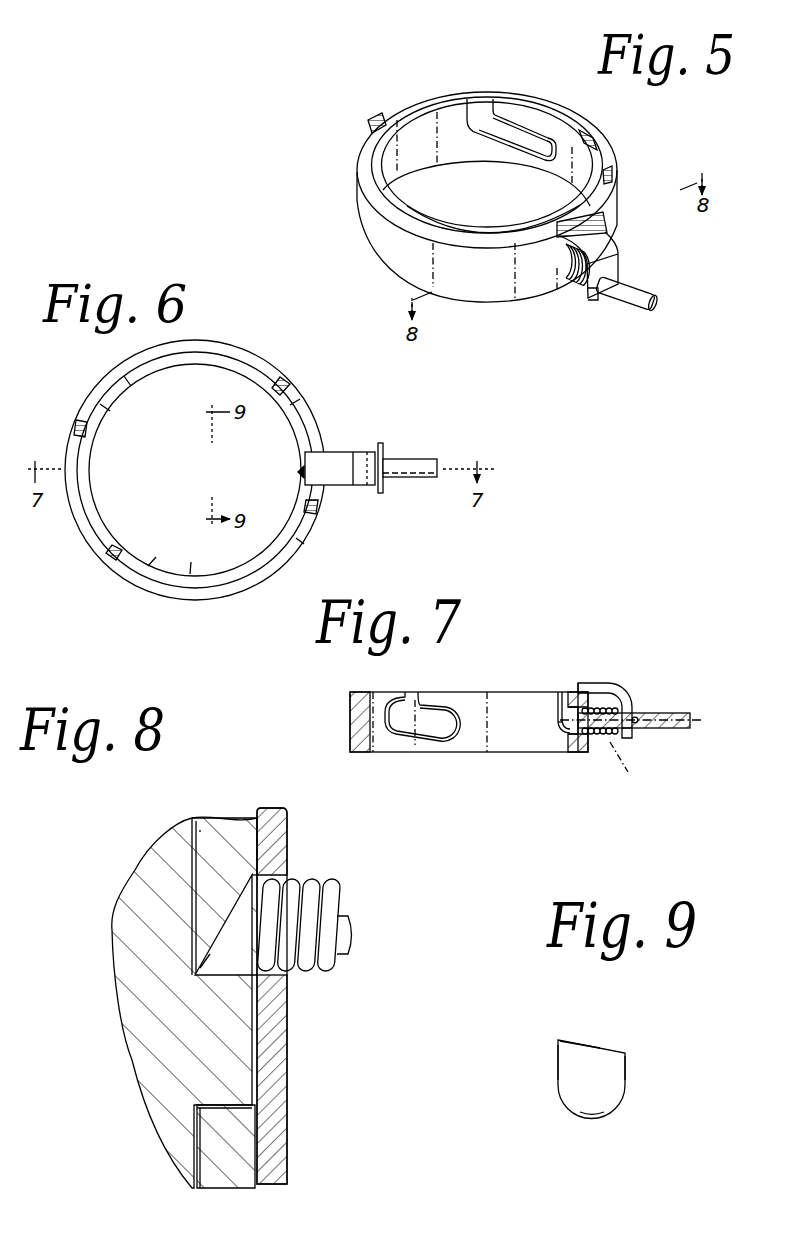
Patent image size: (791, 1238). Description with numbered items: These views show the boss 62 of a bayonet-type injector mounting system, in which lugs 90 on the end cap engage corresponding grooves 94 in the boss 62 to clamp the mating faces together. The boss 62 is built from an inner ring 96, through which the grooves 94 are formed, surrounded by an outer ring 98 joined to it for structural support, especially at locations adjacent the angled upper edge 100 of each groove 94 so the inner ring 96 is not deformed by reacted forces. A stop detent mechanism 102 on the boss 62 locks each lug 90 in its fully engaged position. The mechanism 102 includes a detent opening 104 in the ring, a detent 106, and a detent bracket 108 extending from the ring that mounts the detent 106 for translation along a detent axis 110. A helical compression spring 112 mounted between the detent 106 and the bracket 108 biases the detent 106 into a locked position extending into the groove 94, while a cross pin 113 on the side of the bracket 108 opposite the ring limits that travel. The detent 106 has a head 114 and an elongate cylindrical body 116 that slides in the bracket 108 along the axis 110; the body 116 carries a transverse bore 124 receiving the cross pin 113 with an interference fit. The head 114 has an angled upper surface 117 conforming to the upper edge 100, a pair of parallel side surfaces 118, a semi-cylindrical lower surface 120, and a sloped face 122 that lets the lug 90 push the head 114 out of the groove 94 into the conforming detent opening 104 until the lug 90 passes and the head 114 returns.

In FIG. 5, the boss 62 is at (612, 139).
In FIG. 8, the lug 90 is at (240, 978).
In FIG. 5, the groove 94 is at (575, 203).
In FIG. 6, the groove 94 is at (298, 412).
In FIG. 7, the groove 94 is at (404, 732).
In FIG. 8, the groove 94 is at (216, 830).
In FIG. 5, the inner ring 96 is at (406, 126).
In FIG. 6, the inner ring 96 is at (266, 378).
In FIG. 8, the inner ring 96 is at (200, 1152).
In FIG. 5, the outer ring 98 is at (368, 158).
In FIG. 6, the outer ring 98 is at (250, 358).
In FIG. 8, the outer ring 98 is at (272, 842).
In FIG. 5, the upper edge 100 is at (520, 106).
In FIG. 7, the upper edge 100 is at (436, 698).
In FIG. 5, the stop detent mechanism 102 is at (640, 252).
In FIG. 6, the stop detent mechanism 102 is at (352, 448).
In FIG. 7, the stop detent mechanism 102 is at (633, 618).
In FIG. 5, the detent opening 104 is at (570, 252).
In FIG. 7, the detent opening 104 is at (594, 700).
In FIG. 8, the detent opening 104 is at (216, 960).
In FIG. 5, the detent 106 is at (652, 295).
In FIG. 7, the detent 106 is at (668, 732).
In FIG. 5, the detent bracket 108 is at (612, 213).
In FIG. 6, the detent bracket 108 is at (330, 450).
In FIG. 7, the detent bracket 108 is at (626, 690).
In FIG. 6, the detent axis 110 is at (422, 468).
In FIG. 7, the detent axis 110 is at (700, 714).
In FIG. 5, the helical compression spring 112 is at (578, 272).
In FIG. 7, the helical compression spring 112 is at (598, 740).
In FIG. 8, the helical compression spring 112 is at (306, 880).
In FIG. 5, the cross pin 113 is at (606, 296).
In FIG. 6, the cross pin 113 is at (384, 448).
In FIG. 7, the cross pin 113 is at (658, 720).
In FIG. 7, the head 114 is at (572, 726).
In FIG. 8, the head 114 is at (212, 958).
In FIG. 9, the head 114 is at (580, 1100).
In FIG. 7, the elongate cylindrical body 116 is at (622, 768).
In FIG. 9, the angled upper surface 117 is at (588, 1040).
In FIG. 9, the side surfaces 118 is at (558, 1058).
In FIG. 9, the semi-cylindrical lower surface 120 is at (612, 1106).
In FIG. 6, the sloped face 122 is at (299, 476).
In FIG. 7, the sloped face 122 is at (562, 712).
In FIG. 8, the sloped face 122 is at (178, 842).
In FIG. 7, the transverse bore 124 is at (648, 718).